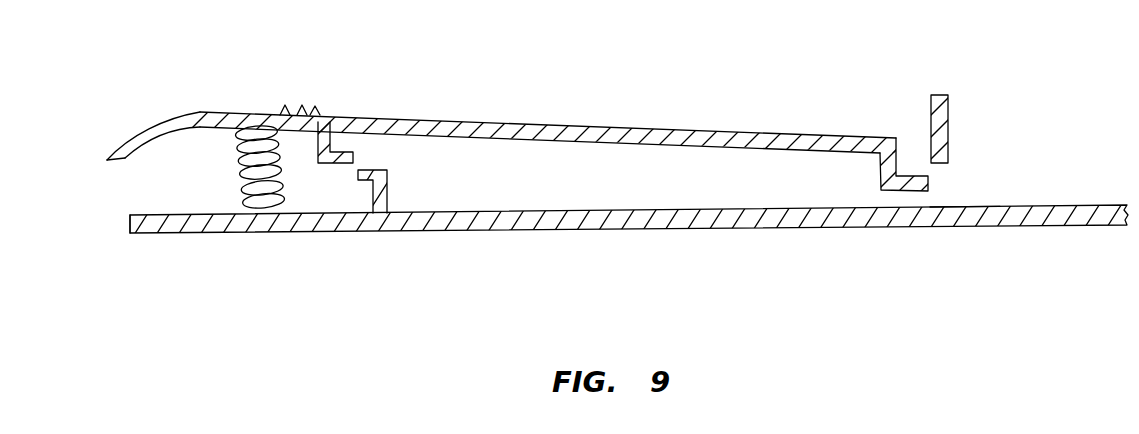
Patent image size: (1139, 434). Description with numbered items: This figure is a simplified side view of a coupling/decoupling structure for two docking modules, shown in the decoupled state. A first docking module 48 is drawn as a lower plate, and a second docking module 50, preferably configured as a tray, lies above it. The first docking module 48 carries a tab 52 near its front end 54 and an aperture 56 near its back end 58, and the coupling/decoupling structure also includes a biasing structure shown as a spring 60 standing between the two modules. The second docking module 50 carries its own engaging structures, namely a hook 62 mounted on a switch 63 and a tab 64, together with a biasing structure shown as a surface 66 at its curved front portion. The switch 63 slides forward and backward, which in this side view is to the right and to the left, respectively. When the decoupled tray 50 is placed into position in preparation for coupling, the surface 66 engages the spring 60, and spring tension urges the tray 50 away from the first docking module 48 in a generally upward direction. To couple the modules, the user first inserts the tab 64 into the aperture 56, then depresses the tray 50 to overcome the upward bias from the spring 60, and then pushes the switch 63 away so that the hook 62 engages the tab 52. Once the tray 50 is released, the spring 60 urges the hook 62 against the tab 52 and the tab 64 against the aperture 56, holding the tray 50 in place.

The first docking module 48 is at (697, 229).
The second docking module 50 is at (697, 131).
The tab 52 is at (385, 188).
The front end 54 is at (127, 225).
The aperture 56 is at (950, 185).
The back end 58 is at (1047, 205).
The spring 60 is at (238, 173).
The hook 62 is at (330, 162).
The switch 63 is at (303, 105).
The tab 64 is at (900, 191).
The surface 66 is at (190, 128).